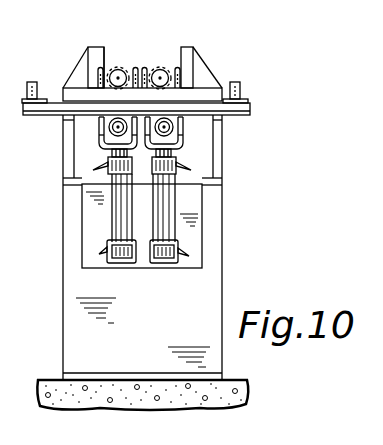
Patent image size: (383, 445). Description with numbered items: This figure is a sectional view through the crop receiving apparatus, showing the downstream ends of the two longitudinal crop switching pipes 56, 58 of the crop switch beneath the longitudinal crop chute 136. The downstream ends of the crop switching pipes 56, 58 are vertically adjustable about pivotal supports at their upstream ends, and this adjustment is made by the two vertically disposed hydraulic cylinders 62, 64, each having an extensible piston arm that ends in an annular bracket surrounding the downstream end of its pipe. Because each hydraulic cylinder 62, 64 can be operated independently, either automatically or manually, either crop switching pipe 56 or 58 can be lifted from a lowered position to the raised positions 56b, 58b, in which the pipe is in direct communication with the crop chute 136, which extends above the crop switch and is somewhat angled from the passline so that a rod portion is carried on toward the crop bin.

The raised position of crop switching pipe 58b is at (118, 66).
The raised position of crop switching pipe 56b is at (160, 66).
The crop chute 136 is at (187, 58).
The crop switching pipe 58 is at (99, 138).
The crop switching pipe 56 is at (183, 137).
The hydraulic cylinder 62 is at (181, 212).
The hydraulic cylinder 64 is at (113, 210).